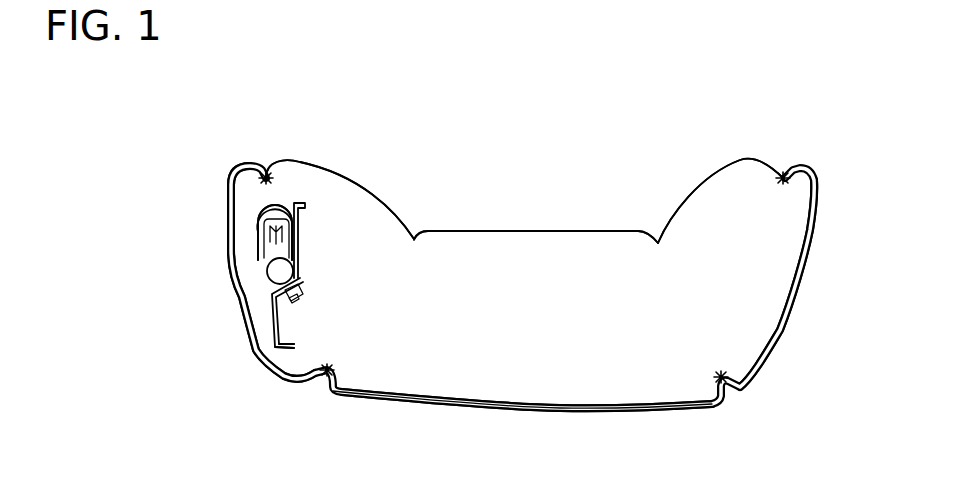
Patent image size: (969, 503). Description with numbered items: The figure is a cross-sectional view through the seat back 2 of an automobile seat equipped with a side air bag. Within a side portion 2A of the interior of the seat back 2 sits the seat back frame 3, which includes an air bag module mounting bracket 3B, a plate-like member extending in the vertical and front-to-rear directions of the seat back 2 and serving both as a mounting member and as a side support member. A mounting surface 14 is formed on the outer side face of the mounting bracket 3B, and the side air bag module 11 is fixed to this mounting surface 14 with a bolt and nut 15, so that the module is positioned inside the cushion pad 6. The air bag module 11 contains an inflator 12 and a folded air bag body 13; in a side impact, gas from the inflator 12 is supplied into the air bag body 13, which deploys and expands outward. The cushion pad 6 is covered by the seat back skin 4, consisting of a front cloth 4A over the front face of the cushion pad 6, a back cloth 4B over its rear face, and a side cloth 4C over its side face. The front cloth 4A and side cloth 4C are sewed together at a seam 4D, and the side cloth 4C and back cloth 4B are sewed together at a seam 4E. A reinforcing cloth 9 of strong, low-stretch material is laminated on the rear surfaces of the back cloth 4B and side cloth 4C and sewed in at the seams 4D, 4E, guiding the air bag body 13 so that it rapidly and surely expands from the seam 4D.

The seat back 2 is at (632, 205).
The side portion 2A is at (405, 330).
The seat back frame 3 is at (314, 262).
The air bag module mounting bracket 3B is at (270, 349).
The seat back skin 4 is at (554, 226).
The front cloth 4A is at (489, 229).
The back cloth 4B is at (530, 412).
The side cloth 4C is at (240, 303).
The seam 4D is at (263, 157).
The seam 4E is at (341, 374).
The cushion pad 6 is at (541, 291).
The reinforcing cloth 9 is at (256, 333).
The side air bag module 11 is at (340, 234).
The inflator 12 is at (268, 276).
The air bag body 13 is at (268, 222).
The mounting surface 14 is at (300, 277).
The bolt and nut 15 is at (304, 293).